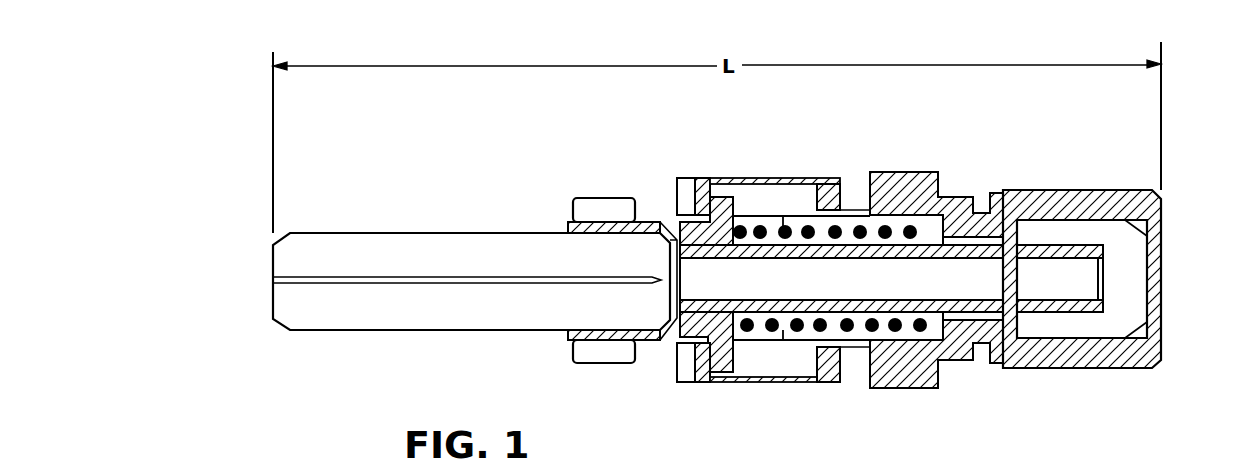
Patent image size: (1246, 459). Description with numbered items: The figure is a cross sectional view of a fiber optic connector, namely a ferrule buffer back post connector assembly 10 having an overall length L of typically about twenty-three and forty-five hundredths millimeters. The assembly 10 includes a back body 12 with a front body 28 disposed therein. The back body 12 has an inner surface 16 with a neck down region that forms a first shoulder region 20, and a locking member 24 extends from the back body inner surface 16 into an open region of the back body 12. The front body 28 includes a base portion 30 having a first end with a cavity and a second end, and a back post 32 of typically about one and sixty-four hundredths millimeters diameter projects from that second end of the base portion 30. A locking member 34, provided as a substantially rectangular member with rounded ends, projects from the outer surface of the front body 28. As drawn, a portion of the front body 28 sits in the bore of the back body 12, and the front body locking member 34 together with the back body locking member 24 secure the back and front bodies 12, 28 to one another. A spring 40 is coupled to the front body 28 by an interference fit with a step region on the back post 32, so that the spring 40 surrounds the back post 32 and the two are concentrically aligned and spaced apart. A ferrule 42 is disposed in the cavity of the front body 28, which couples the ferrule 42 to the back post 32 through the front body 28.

The ferrule buffer back post connector assembly 10 is at (228, 230).
The back body 12 is at (1040, 190).
The inner surface 16 is at (1125, 220).
The first shoulder region 20 is at (940, 218).
The locking member 24 is at (683, 200).
The front body 28 is at (655, 223).
The base portion 30 is at (653, 335).
The back post 32 is at (1033, 245).
The locking member 34 is at (748, 185).
The spring 40 is at (795, 318).
The ferrule 42 is at (372, 322).